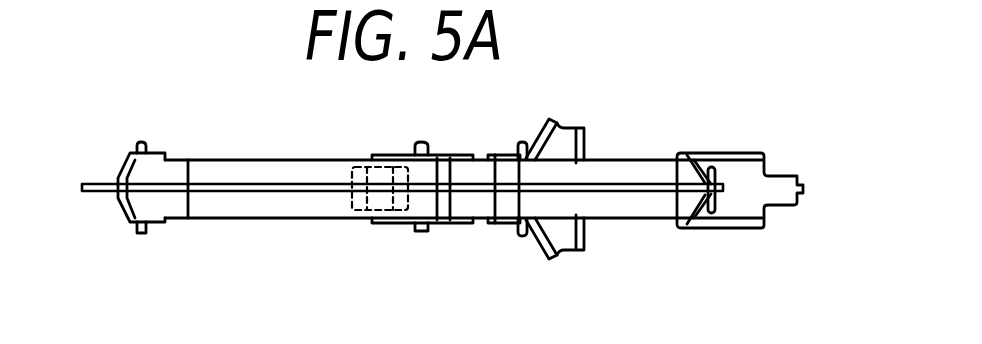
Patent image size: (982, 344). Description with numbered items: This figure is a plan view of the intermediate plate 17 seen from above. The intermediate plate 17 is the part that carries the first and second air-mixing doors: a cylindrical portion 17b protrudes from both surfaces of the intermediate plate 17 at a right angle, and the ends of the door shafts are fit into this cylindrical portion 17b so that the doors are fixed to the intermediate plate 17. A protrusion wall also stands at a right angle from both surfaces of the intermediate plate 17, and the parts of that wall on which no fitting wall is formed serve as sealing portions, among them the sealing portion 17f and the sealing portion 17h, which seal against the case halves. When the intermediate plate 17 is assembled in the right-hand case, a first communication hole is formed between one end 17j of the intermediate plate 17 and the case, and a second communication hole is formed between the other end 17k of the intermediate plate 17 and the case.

The intermediate plate 17 is at (112, 152).
The one end of the intermediate plate 17j is at (232, 183).
The sealing portion 17f is at (248, 202).
The cylindrical portion 17b is at (350, 166).
The sealing portion 17h is at (465, 162).
The one end of the intermediate plate 17k is at (601, 185).